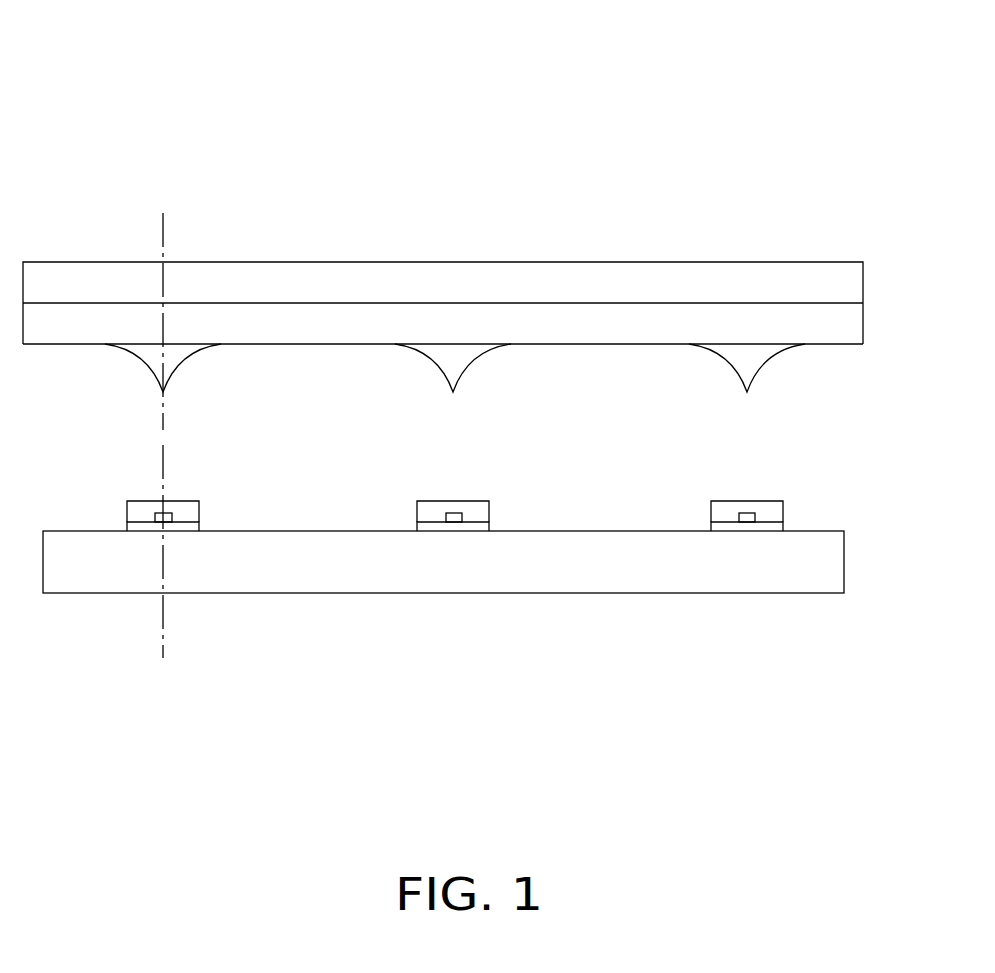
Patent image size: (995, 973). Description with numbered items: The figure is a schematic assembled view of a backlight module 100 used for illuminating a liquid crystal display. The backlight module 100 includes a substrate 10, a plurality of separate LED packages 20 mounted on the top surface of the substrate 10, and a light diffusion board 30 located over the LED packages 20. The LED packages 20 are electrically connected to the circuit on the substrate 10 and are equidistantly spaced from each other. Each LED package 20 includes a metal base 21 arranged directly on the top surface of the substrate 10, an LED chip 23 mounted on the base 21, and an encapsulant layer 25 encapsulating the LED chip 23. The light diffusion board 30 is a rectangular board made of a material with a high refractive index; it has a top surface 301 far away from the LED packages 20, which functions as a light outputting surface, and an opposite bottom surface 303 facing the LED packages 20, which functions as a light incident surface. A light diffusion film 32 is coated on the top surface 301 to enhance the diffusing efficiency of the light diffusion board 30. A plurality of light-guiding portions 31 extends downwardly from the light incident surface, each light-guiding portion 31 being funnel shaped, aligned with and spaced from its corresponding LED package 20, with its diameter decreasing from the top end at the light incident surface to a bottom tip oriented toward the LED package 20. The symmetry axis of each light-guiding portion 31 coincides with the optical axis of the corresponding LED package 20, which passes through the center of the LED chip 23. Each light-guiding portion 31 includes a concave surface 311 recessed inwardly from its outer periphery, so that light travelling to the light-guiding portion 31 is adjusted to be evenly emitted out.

The backlight module 100 is at (375, 62).
The substrate 10 is at (385, 576).
The LED package 20 is at (492, 598).
The metal base 21 is at (720, 526).
The LED chip 23 is at (747, 519).
The encapsulant layer 25 is at (770, 510).
The light diffusion board 30 is at (850, 323).
The top surface 301 is at (765, 303).
The bottom surface 303 is at (843, 344).
The light-guiding portion 31 is at (743, 375).
The concave surface 311 is at (722, 365).
The light diffusion film 32 is at (543, 272).